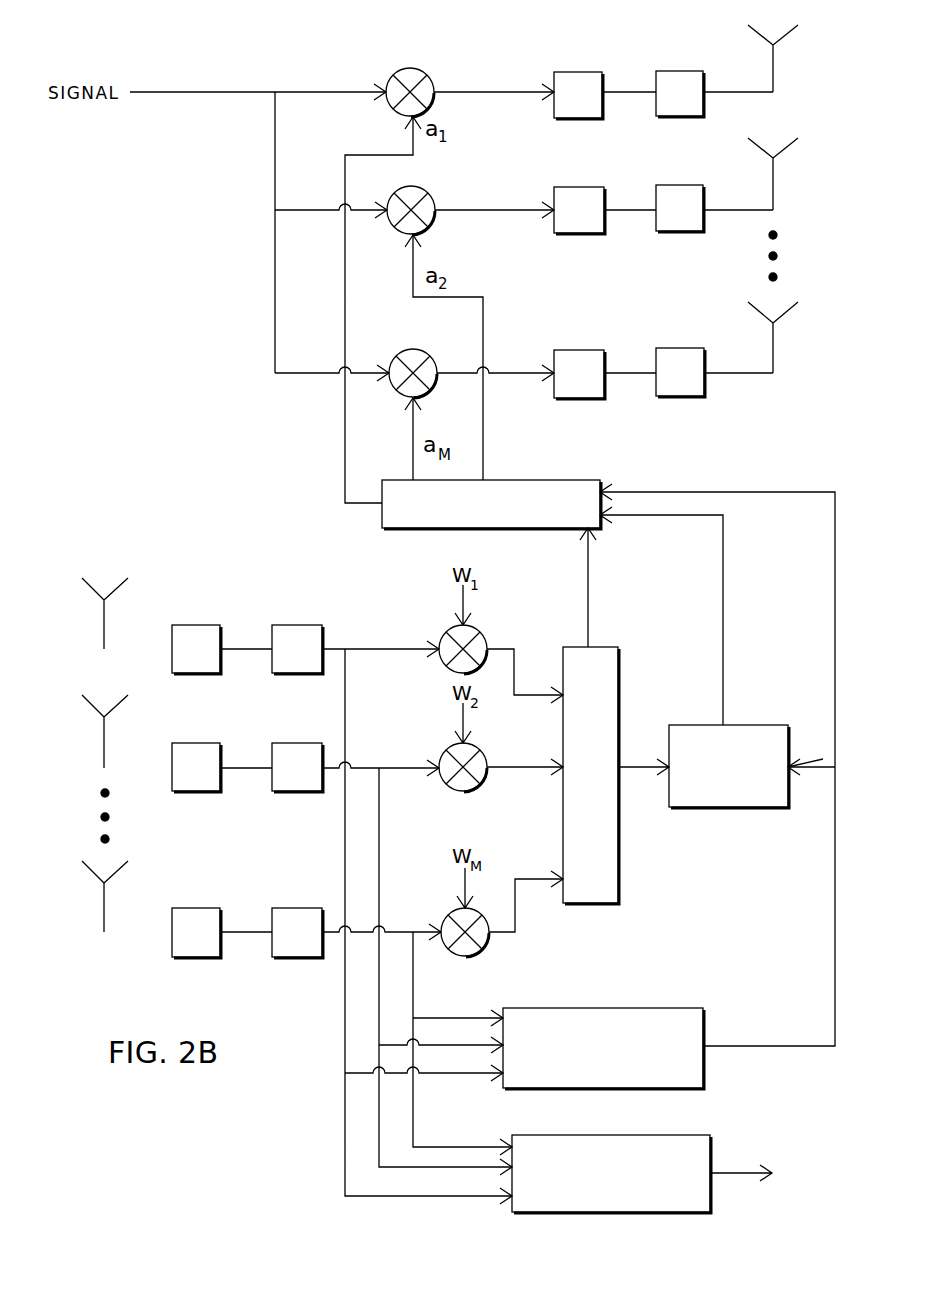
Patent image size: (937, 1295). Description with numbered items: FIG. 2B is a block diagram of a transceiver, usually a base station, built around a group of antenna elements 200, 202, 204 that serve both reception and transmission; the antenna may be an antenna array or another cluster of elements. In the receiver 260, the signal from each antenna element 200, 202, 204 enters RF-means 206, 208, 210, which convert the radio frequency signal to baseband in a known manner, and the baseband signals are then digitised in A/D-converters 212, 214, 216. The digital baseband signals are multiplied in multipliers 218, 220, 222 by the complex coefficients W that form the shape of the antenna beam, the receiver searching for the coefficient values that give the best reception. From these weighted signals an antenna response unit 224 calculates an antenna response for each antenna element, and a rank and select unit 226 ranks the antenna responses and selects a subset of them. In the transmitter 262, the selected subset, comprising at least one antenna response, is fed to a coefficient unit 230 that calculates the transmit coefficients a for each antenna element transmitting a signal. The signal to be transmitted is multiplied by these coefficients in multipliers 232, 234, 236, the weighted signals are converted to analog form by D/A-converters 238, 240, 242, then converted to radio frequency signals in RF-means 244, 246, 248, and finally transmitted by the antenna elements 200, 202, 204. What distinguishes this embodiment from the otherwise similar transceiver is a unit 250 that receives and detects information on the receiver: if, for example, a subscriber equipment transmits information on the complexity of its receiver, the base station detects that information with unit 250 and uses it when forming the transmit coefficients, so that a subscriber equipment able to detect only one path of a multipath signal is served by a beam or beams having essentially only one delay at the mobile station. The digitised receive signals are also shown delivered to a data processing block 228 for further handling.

The antenna element 200 is at (773, 65).
The antenna element 202 is at (773, 182).
The antenna element 204 is at (773, 348).
The RF-means 206 is at (194, 625).
The RF-means 208 is at (194, 743).
The RF-means 210 is at (194, 908).
The A/D-converter 212 is at (298, 625).
The A/D-converter 214 is at (297, 743).
The A/D-converter 216 is at (297, 908).
The multiplier 218 is at (450, 630).
The multiplier 220 is at (450, 748).
The multiplier 222 is at (452, 915).
The antenna response unit 224 is at (597, 647).
The rank and select unit 226 is at (712, 725).
The data processing unit 228 is at (668, 1135).
The coefficient unit 230 is at (585, 480).
The multiplier 232 is at (408, 68).
The multiplier 234 is at (412, 186).
The multiplier 236 is at (413, 349).
The D/A-converter 238 is at (580, 72).
The D/A-converter 240 is at (580, 187).
The D/A-converter 242 is at (580, 350).
The RF-means 244 is at (682, 71).
The RF-means 246 is at (682, 185).
The RF-means 248 is at (682, 348).
The unit 250 is at (658, 1008).
The receiver 260 is at (709, 912).
The transmitter 262 is at (749, 414).